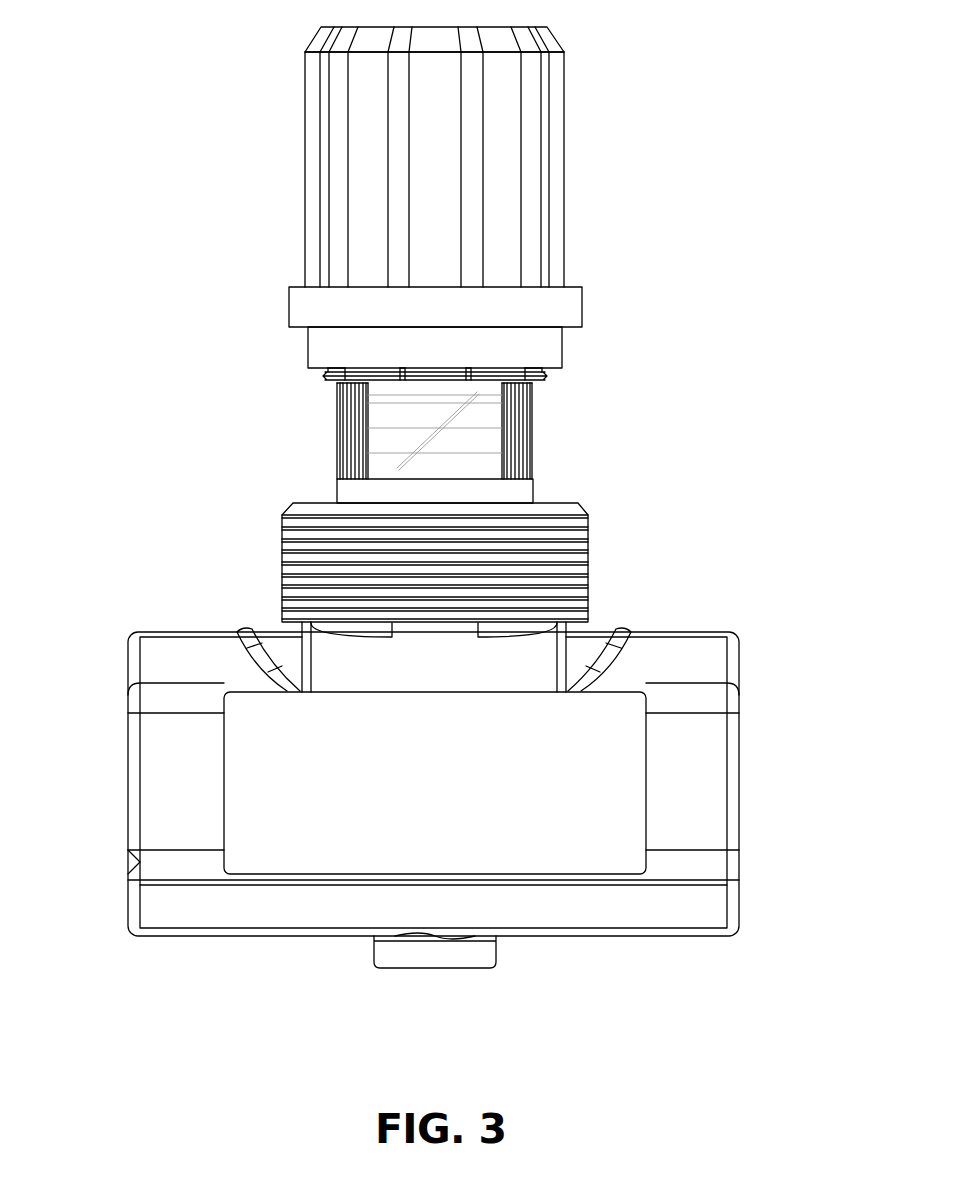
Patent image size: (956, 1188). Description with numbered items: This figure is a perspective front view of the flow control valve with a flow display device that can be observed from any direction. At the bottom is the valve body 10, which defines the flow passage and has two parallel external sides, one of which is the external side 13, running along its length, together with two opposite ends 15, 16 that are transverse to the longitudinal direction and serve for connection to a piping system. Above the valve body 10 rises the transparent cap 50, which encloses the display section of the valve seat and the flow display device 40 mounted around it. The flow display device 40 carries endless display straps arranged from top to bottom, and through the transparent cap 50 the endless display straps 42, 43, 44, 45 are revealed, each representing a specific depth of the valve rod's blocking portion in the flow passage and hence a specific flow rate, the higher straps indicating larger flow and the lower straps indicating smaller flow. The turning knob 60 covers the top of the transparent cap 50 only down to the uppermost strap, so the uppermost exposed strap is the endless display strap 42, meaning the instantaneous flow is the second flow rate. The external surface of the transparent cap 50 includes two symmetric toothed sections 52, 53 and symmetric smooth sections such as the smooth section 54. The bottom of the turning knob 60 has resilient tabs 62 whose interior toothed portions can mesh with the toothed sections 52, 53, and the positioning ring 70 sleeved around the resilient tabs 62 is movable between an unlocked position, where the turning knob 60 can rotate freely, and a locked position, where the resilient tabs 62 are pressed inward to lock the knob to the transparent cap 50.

The valve body 10 is at (435, 735).
The external side 13 is at (248, 798).
The opposite end 15 is at (128, 673).
The opposite end 16 is at (740, 673).
The flow display device 40 is at (542, 462).
The endless display strap 42 is at (483, 394).
The endless display strap 43 is at (485, 417).
The endless display strap 44 is at (485, 441).
The endless display strap 45 is at (478, 470).
The transparent cap 50 is at (454, 459).
The toothed section 52 is at (343, 400).
The toothed section 53 is at (532, 392).
The smooth section 54 is at (483, 462).
The turning knob 60 is at (555, 163).
The resilient tabs 62 is at (370, 372).
The positioning ring 70 is at (570, 303).